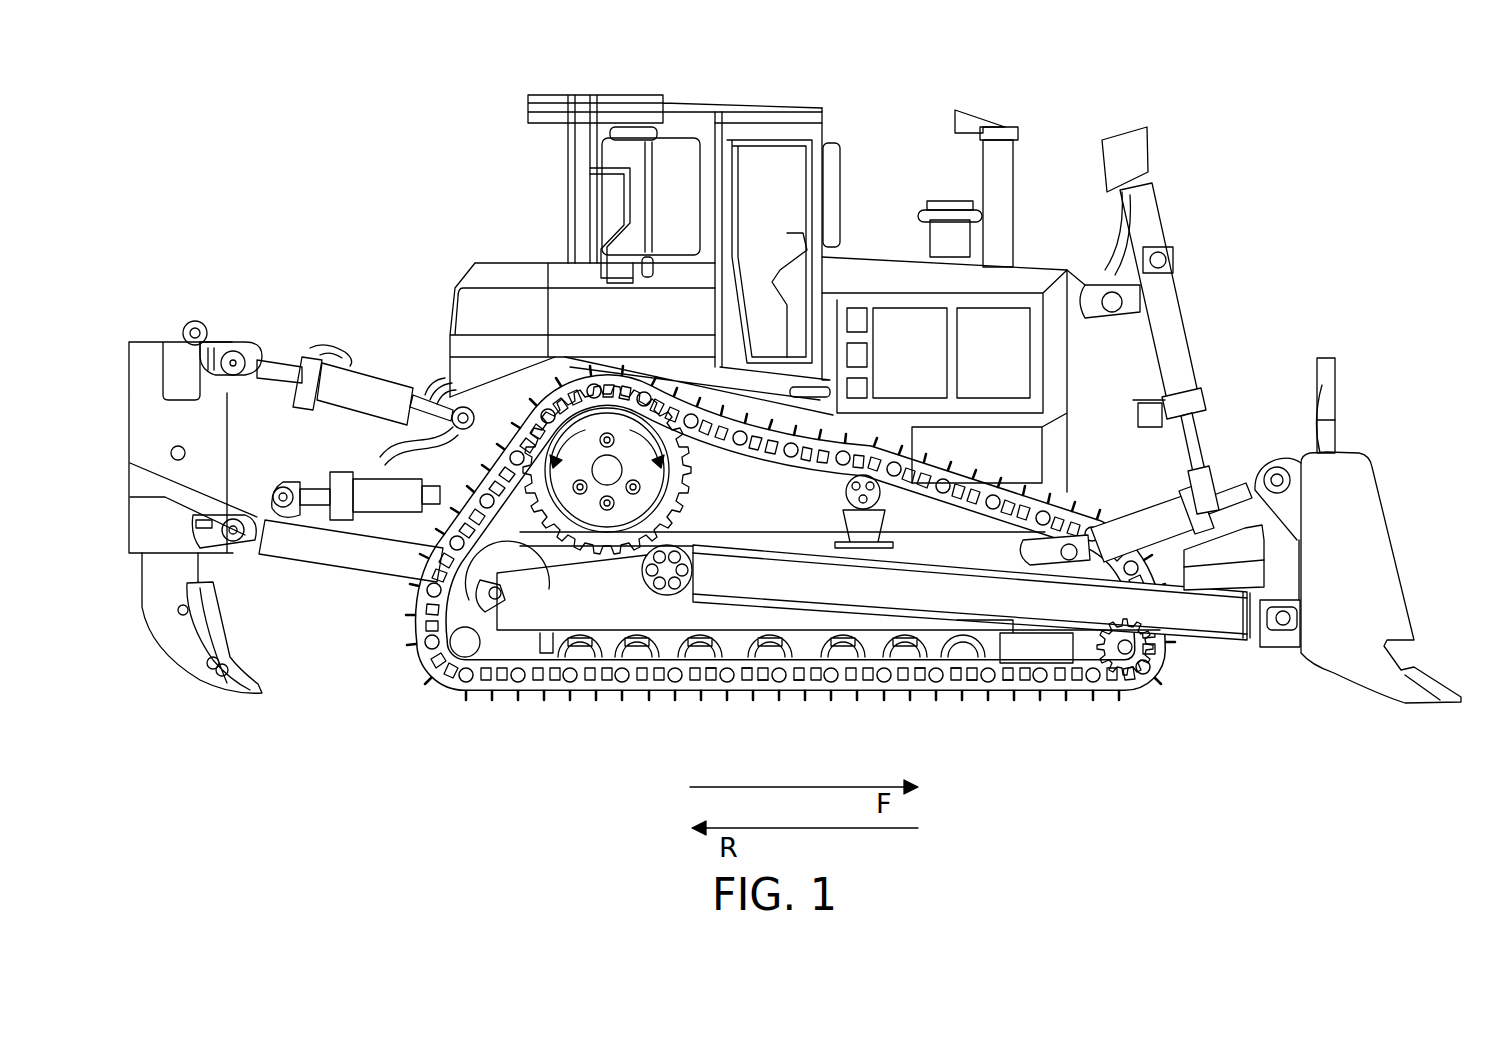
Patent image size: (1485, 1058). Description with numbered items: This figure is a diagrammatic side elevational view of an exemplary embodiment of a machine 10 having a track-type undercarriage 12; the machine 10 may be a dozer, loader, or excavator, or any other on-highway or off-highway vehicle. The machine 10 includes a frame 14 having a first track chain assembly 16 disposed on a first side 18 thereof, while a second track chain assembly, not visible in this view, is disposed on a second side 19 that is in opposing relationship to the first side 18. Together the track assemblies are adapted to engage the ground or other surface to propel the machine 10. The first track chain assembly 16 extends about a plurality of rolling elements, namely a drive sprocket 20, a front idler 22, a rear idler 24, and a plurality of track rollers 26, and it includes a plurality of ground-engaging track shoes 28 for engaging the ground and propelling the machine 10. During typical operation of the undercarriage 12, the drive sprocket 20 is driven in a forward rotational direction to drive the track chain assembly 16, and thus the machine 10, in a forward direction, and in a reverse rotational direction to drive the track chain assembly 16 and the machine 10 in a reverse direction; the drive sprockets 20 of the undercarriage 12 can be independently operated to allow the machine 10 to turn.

The machine 10 is at (622, 368).
The track-type undercarriage 12 is at (428, 680).
The frame 14 is at (1133, 467).
The first track chain assembly 16 is at (665, 708).
The first side 18 is at (425, 306).
The second side 19 is at (515, 250).
The drive sprocket 20 is at (657, 467).
The front idler 22 is at (1087, 673).
The rear idler 24 is at (510, 683).
The track rollers 26 is at (725, 697).
The ground-engaging track shoes 28 is at (977, 690).